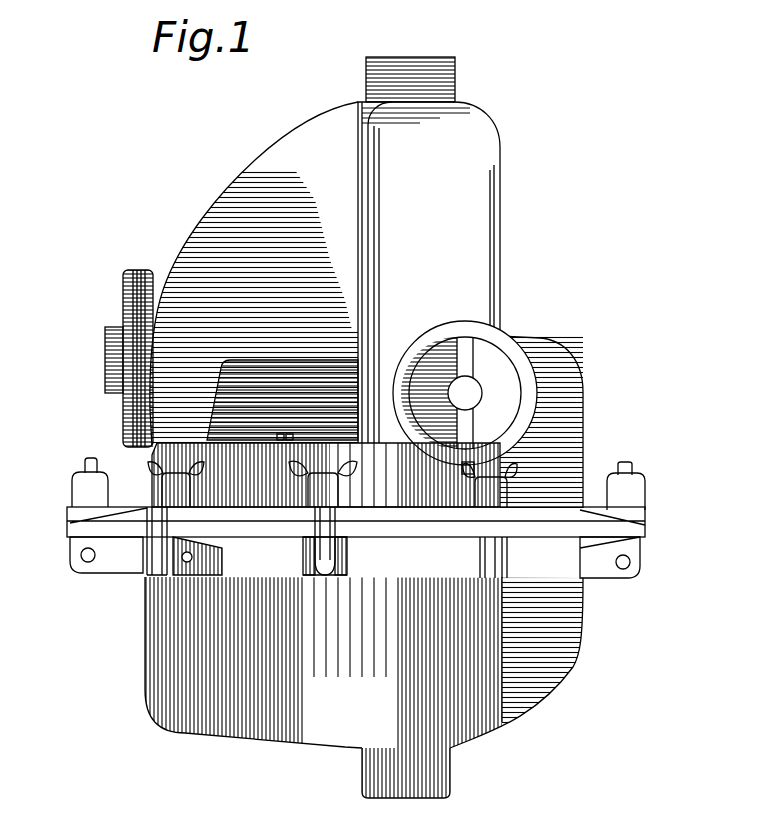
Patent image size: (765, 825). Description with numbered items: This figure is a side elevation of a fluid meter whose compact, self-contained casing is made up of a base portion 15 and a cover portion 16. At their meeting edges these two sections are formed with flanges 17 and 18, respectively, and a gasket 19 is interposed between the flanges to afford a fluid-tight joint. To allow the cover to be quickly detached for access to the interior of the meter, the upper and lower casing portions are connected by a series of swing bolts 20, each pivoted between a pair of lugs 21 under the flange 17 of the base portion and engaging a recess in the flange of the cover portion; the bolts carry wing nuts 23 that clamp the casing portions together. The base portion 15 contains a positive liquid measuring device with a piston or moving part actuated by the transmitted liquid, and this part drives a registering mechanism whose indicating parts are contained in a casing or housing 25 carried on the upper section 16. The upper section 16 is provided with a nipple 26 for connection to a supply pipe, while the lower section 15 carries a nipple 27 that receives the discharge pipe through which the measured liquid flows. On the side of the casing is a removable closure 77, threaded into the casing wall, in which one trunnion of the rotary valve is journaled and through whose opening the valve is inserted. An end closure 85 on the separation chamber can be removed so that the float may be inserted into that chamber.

The base portion 15 is at (170, 658).
The cover portion 16 is at (292, 154).
The flange 17 is at (133, 537).
The flange 18 is at (273, 497).
The gasket 19 is at (68, 524).
The swing bolt 20 is at (323, 538).
The lug 21 is at (343, 576).
The wing nut 23 is at (82, 478).
The casing or housing 25 is at (318, 378).
The nipple 26 is at (455, 72).
The nipple 27 is at (450, 780).
The removable closure 77 is at (505, 343).
The end closure 85 is at (127, 398).